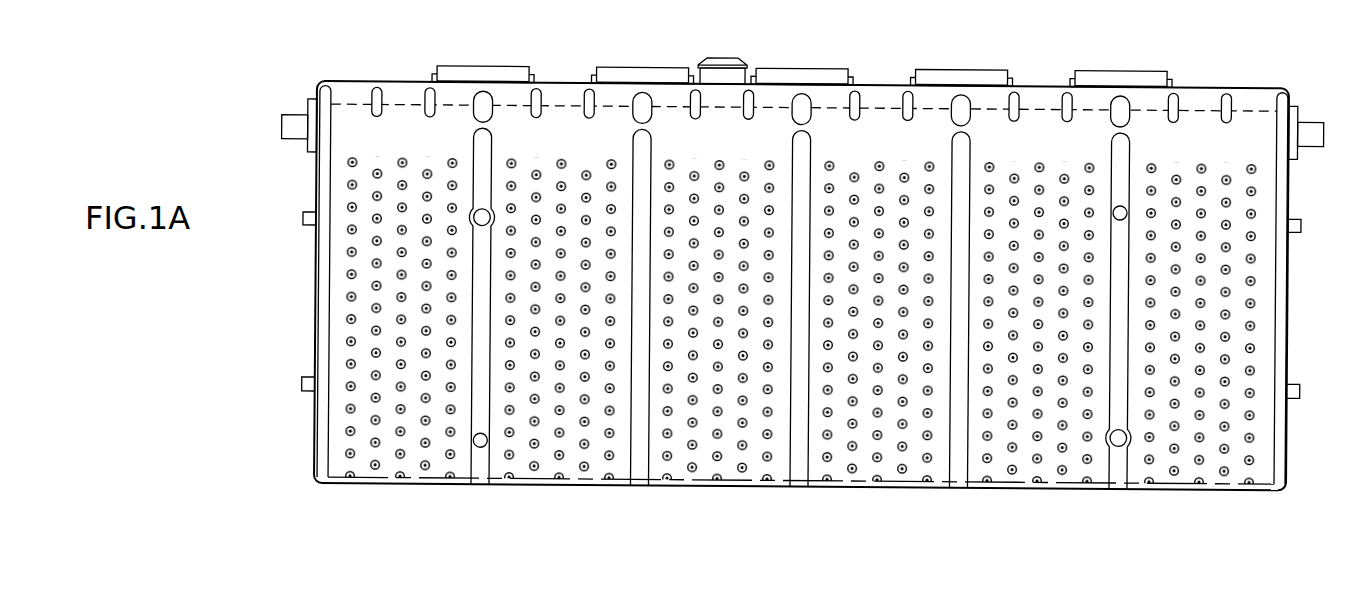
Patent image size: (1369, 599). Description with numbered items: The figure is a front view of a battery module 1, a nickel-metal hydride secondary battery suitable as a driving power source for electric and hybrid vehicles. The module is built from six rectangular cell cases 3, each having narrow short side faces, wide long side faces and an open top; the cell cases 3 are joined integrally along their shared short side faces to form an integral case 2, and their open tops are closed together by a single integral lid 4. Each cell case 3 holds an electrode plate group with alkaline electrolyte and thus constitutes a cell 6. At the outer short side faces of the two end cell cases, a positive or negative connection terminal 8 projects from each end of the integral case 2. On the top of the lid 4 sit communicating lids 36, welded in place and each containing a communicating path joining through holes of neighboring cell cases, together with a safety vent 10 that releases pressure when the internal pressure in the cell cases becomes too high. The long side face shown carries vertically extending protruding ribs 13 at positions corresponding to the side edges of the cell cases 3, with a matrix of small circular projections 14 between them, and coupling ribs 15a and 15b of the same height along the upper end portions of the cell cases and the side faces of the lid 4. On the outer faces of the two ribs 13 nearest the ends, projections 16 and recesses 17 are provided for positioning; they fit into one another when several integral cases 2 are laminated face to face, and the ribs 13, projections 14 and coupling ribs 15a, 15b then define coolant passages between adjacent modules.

The battery module 1 is at (281, 276).
The integral case 2 is at (308, 350).
The cell case 3 is at (389, 472).
The integral lid 4 is at (338, 88).
The cell 6 is at (417, 488).
The connection terminal 8 is at (290, 125).
The safety vent 10 is at (721, 69).
The protruding rib 13 is at (480, 334).
The circular projection 14 is at (347, 453).
The coupling rib 15a is at (962, 89).
The coupling rib 15b is at (1017, 87).
The projection 16 is at (483, 448).
The recess 17 is at (470, 216).
The communicating lid 36 is at (476, 70).